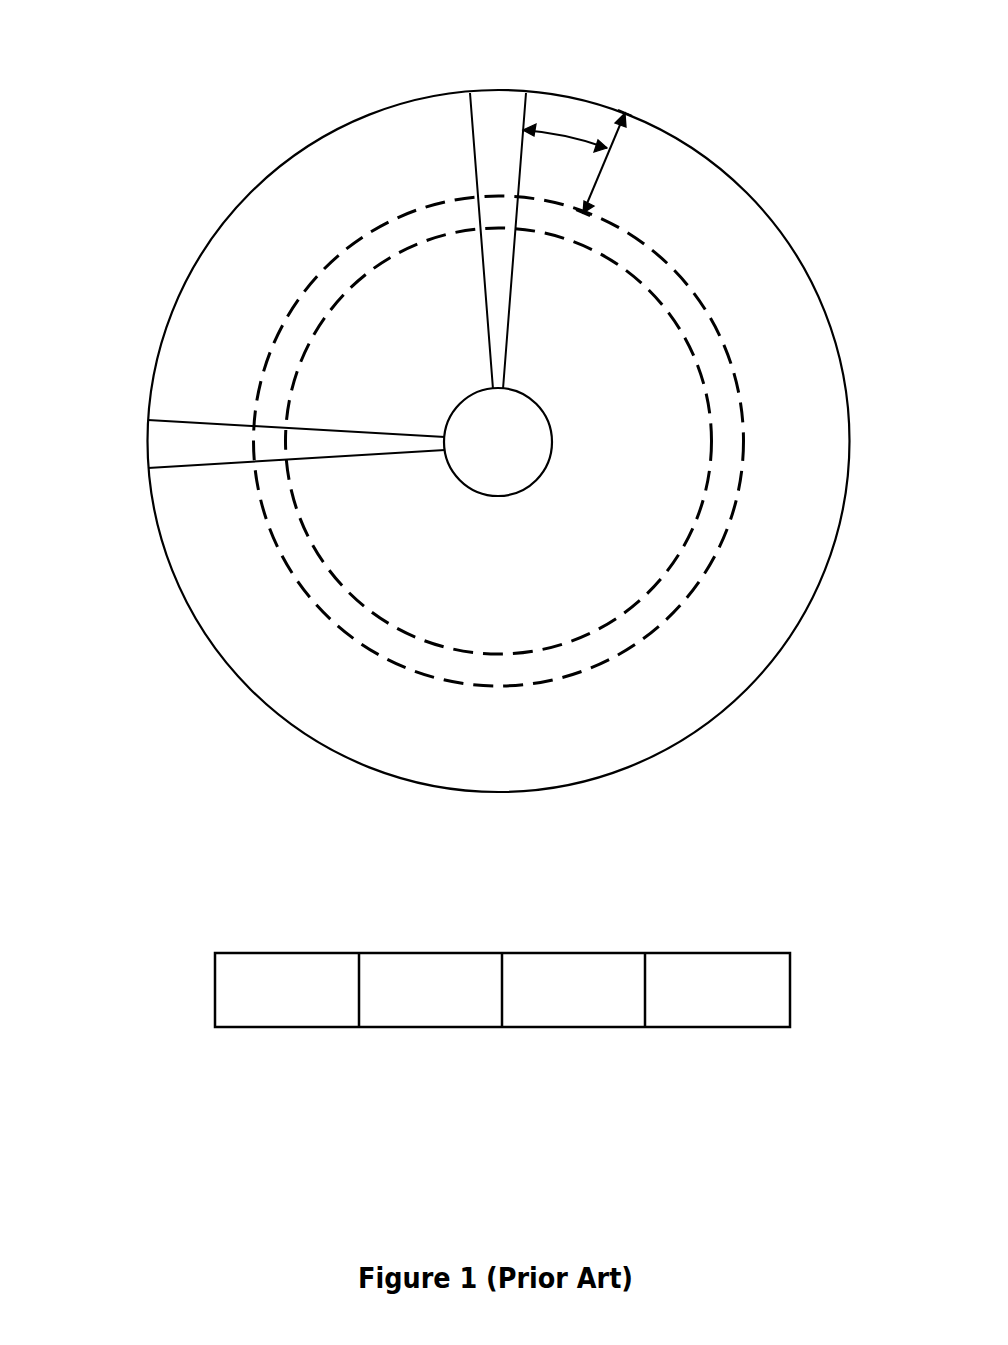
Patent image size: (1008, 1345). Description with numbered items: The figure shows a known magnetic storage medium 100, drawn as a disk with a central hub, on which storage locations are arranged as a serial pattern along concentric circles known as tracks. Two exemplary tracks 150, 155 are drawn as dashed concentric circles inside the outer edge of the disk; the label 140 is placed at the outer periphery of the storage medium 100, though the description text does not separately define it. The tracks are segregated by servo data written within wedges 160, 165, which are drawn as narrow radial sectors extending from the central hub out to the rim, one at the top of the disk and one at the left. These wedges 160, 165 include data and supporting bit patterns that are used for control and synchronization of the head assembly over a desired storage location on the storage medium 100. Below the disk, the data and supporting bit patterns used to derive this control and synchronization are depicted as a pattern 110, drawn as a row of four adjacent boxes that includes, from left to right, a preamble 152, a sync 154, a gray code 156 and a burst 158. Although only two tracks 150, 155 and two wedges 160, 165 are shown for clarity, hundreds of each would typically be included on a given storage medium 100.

The storage medium 100 is at (183, 97).
The pattern 110 is at (629, 911).
The outer edge of disk 140 is at (793, 247).
The track 150 is at (743, 440).
The track 155 is at (710, 387).
The wedge 160 is at (494, 125).
The wedge 165 is at (181, 444).
The preamble 152 is at (287, 997).
The sync 154 is at (430, 997).
The gray code 156 is at (573, 997).
The burst 158 is at (717, 997).